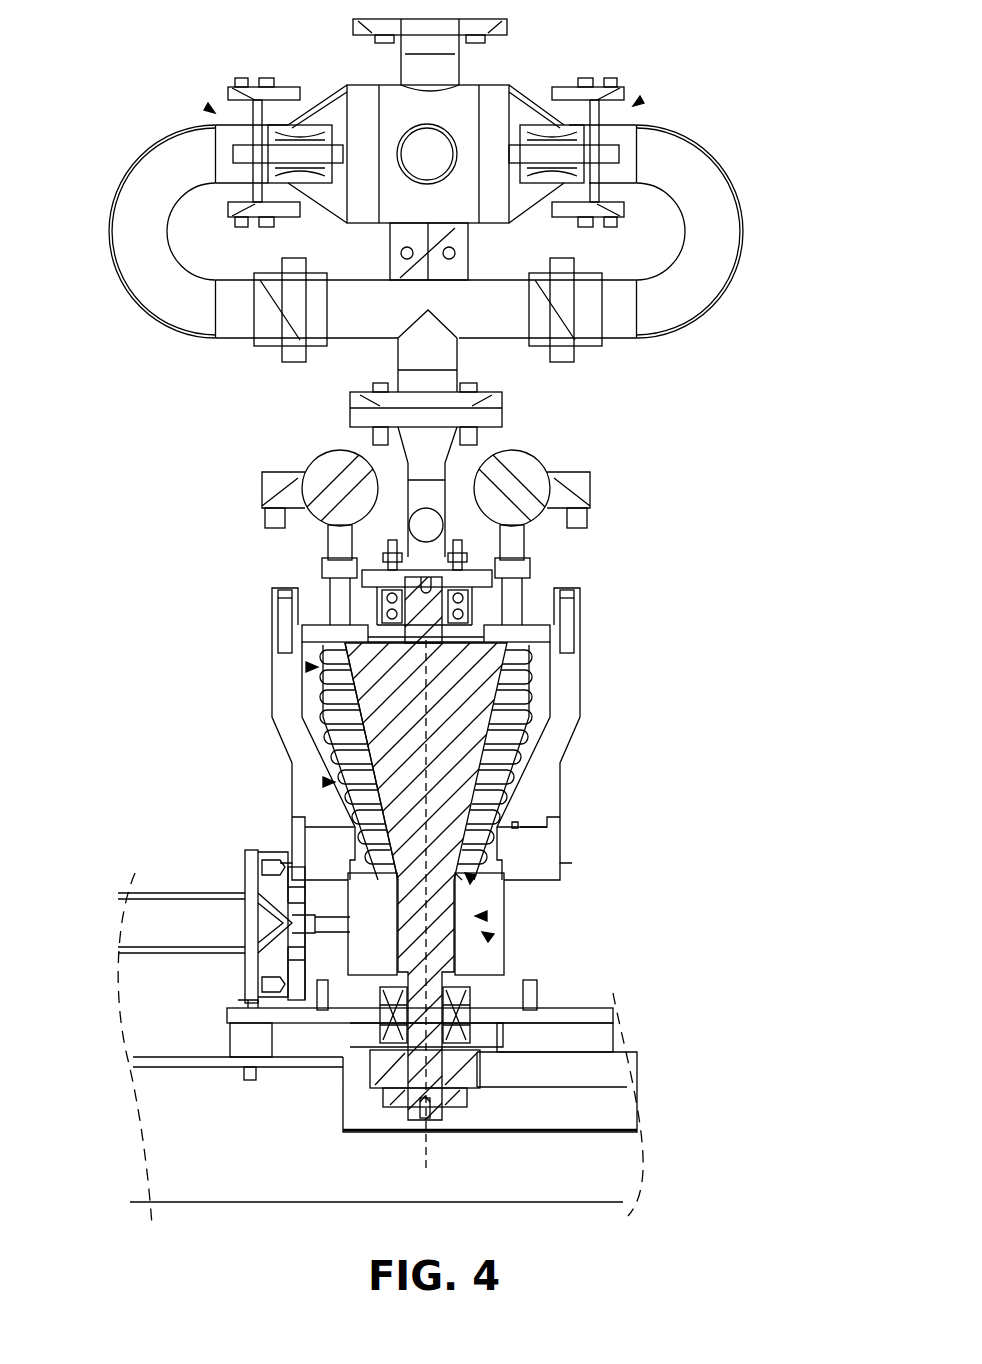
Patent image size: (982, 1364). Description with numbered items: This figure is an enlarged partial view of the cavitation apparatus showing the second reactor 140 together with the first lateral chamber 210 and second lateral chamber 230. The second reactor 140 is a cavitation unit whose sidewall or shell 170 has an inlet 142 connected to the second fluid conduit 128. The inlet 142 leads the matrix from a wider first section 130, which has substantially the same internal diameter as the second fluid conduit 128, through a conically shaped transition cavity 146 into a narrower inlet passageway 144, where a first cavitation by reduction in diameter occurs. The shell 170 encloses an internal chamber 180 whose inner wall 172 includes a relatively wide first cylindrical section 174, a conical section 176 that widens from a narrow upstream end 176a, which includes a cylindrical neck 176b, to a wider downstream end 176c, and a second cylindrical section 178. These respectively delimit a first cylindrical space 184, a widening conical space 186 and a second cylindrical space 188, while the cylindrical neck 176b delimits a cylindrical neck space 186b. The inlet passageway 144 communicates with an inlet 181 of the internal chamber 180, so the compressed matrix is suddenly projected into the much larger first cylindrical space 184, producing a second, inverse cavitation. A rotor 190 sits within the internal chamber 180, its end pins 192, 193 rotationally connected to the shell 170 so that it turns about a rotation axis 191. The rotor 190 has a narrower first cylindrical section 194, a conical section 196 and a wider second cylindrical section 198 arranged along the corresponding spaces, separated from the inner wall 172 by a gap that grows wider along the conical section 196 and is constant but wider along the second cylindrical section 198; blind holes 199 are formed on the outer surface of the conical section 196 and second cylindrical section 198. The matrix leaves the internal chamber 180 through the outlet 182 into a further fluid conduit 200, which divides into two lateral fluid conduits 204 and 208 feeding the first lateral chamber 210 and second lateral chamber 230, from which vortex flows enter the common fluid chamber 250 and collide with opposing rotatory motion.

The second fluid conduit 128 is at (160, 950).
The first section 130 is at (242, 943).
The second reactor 140 is at (582, 640).
The inlet 142 is at (247, 847).
The inlet passageway 144 is at (327, 927).
The transition cavity 146 is at (267, 927).
The shell 170 is at (565, 725).
The inner wall 172 is at (543, 703).
The first cylindrical section 174 is at (500, 970).
The conical section 176 is at (505, 790).
The upstream end 176a is at (352, 872).
The cylindrical neck 176b is at (470, 862).
The downstream end 176c is at (560, 715).
The second cylindrical section 178 is at (542, 678).
The internal chamber 180 is at (478, 916).
The inlet of the internal chamber 181 is at (368, 915).
The outlet 182 is at (385, 612).
The first cylindrical space 184 is at (485, 933).
The conical space 186 is at (332, 782).
The cylindrical neck space 186b is at (470, 876).
The second cylindrical space 188 is at (315, 665).
The rotor 190 is at (385, 712).
The rotation axis 191 is at (427, 1153).
The end pin 192 is at (438, 1092).
The end pin 193 is at (440, 610).
The first cylindrical section 194 is at (362, 930).
The conical section 196 is at (408, 764).
The second cylindrical section 198 is at (358, 683).
The blind holes 199 is at (515, 730).
The further fluid conduit 200 is at (450, 472).
The lateral fluid conduit 204 is at (157, 293).
The lateral fluid conduit 208 is at (722, 272).
The first lateral chamber 210 is at (212, 110).
The second lateral chamber 230 is at (636, 103).
The common fluid chamber 250 is at (460, 105).